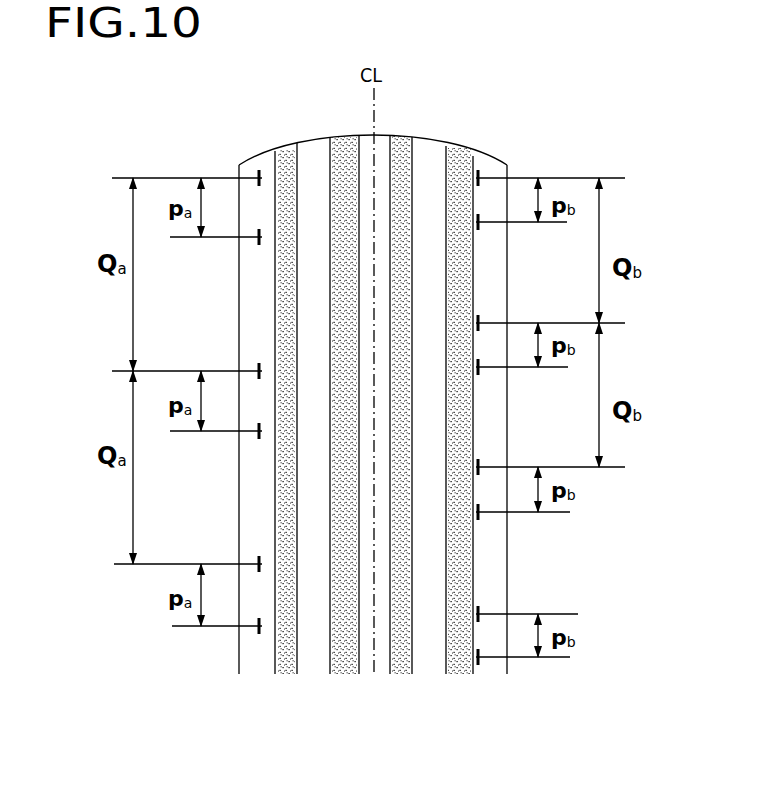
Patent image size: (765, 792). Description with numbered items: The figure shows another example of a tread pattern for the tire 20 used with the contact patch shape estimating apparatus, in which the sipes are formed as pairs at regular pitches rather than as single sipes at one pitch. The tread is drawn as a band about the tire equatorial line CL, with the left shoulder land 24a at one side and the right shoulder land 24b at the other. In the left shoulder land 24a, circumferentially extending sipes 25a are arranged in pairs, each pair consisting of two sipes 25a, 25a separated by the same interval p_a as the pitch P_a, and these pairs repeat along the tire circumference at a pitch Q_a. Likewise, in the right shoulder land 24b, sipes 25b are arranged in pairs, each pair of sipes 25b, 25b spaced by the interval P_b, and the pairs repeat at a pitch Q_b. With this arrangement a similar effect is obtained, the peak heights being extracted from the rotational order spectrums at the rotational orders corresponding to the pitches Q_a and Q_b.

The tire 20 is at (484, 147).
The left shoulder land 24a is at (252, 172).
The right shoulder land 24b is at (494, 165).
The sipe 25a is at (256, 171).
The sipe 25b is at (476, 214).